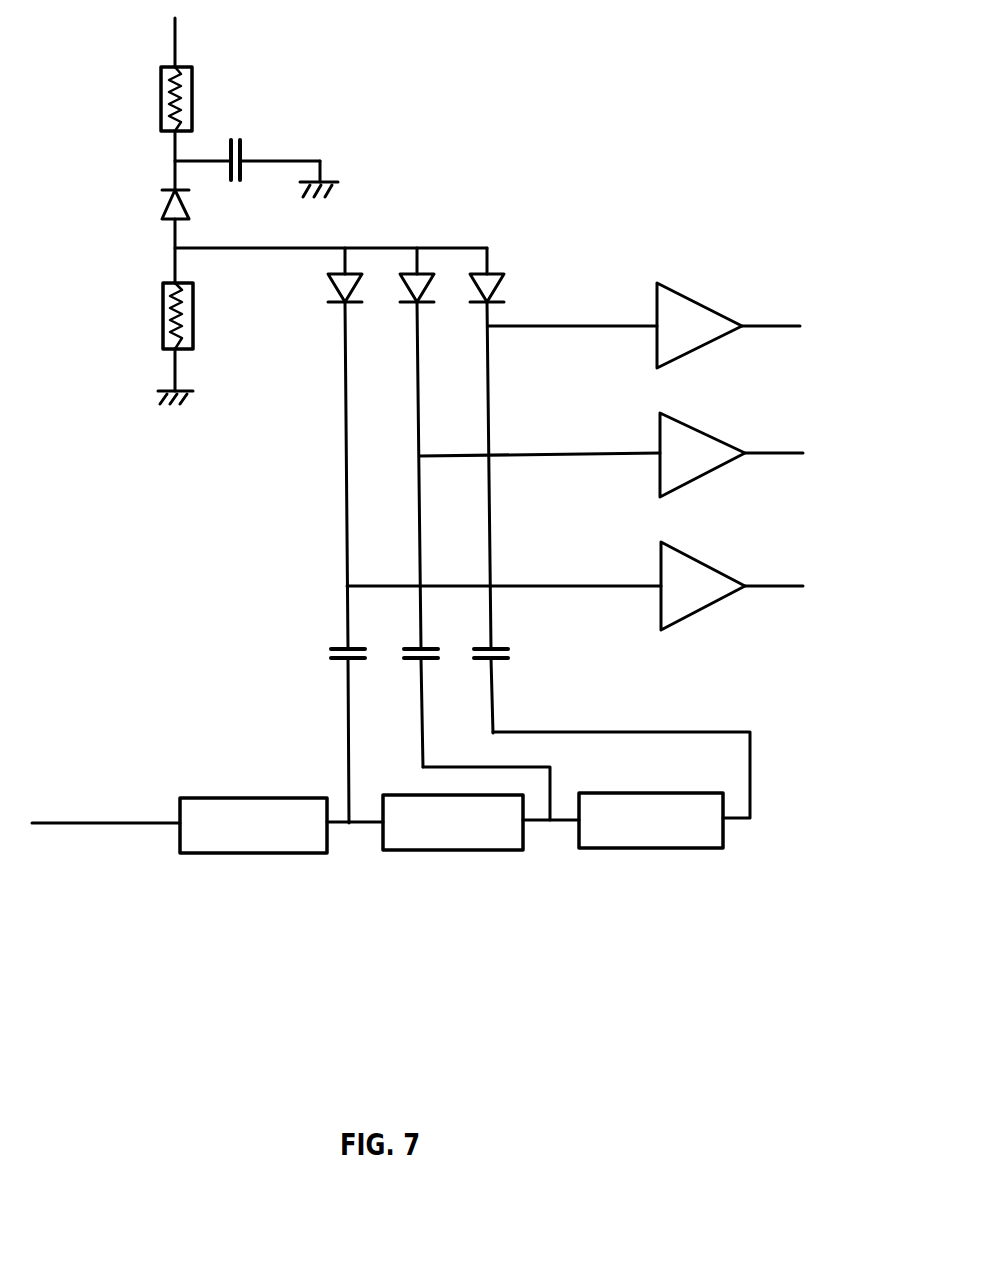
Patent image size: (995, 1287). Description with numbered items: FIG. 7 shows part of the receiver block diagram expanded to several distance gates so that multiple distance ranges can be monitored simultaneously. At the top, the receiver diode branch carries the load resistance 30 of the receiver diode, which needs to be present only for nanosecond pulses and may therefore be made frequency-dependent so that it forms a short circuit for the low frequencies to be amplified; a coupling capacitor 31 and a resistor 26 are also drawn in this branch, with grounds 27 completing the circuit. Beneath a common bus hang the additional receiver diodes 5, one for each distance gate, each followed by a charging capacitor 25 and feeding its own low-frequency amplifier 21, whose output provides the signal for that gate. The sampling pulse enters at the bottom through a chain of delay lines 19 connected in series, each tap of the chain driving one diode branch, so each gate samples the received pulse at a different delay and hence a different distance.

The load resistance 30 is at (197, 68).
The capacitor 31 is at (228, 138).
The ground 27 is at (333, 173).
The receiver diode 5 is at (190, 210).
The resistor 26 is at (190, 305).
The low-frequency amplifier 21 is at (749, 345).
The charging capacitor 25 is at (337, 660).
The delay line 19 is at (220, 853).